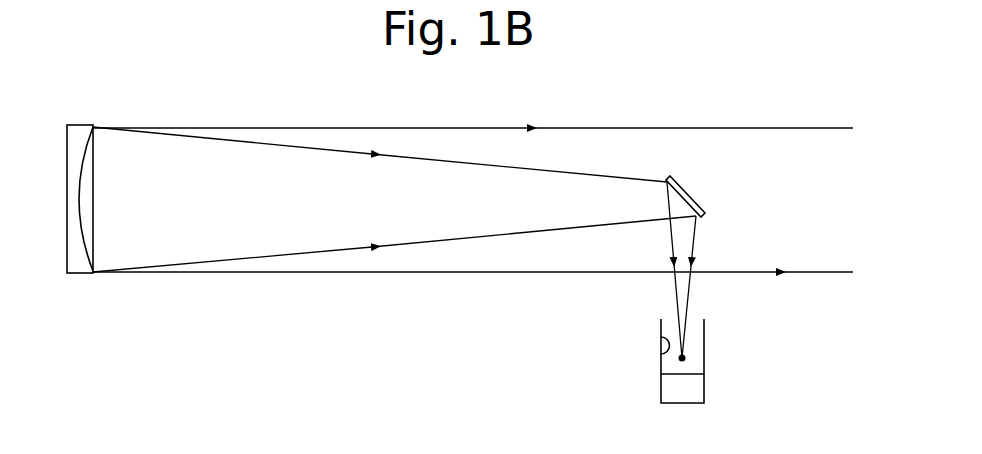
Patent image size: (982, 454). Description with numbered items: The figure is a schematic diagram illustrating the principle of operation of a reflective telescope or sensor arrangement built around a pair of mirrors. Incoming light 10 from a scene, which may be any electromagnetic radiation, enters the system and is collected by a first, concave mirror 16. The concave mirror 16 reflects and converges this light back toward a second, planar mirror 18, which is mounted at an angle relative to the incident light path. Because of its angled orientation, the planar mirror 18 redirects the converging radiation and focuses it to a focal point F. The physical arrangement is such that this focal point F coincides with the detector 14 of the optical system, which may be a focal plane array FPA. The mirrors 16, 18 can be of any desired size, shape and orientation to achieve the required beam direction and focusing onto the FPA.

The light 10 is at (806, 128).
The concave mirror 16 is at (80, 263).
The planar mirror 18 is at (698, 191).
The detector 14 is at (691, 386).
The focal point F is at (686, 357).
The focal plane array FPA is at (661, 355).